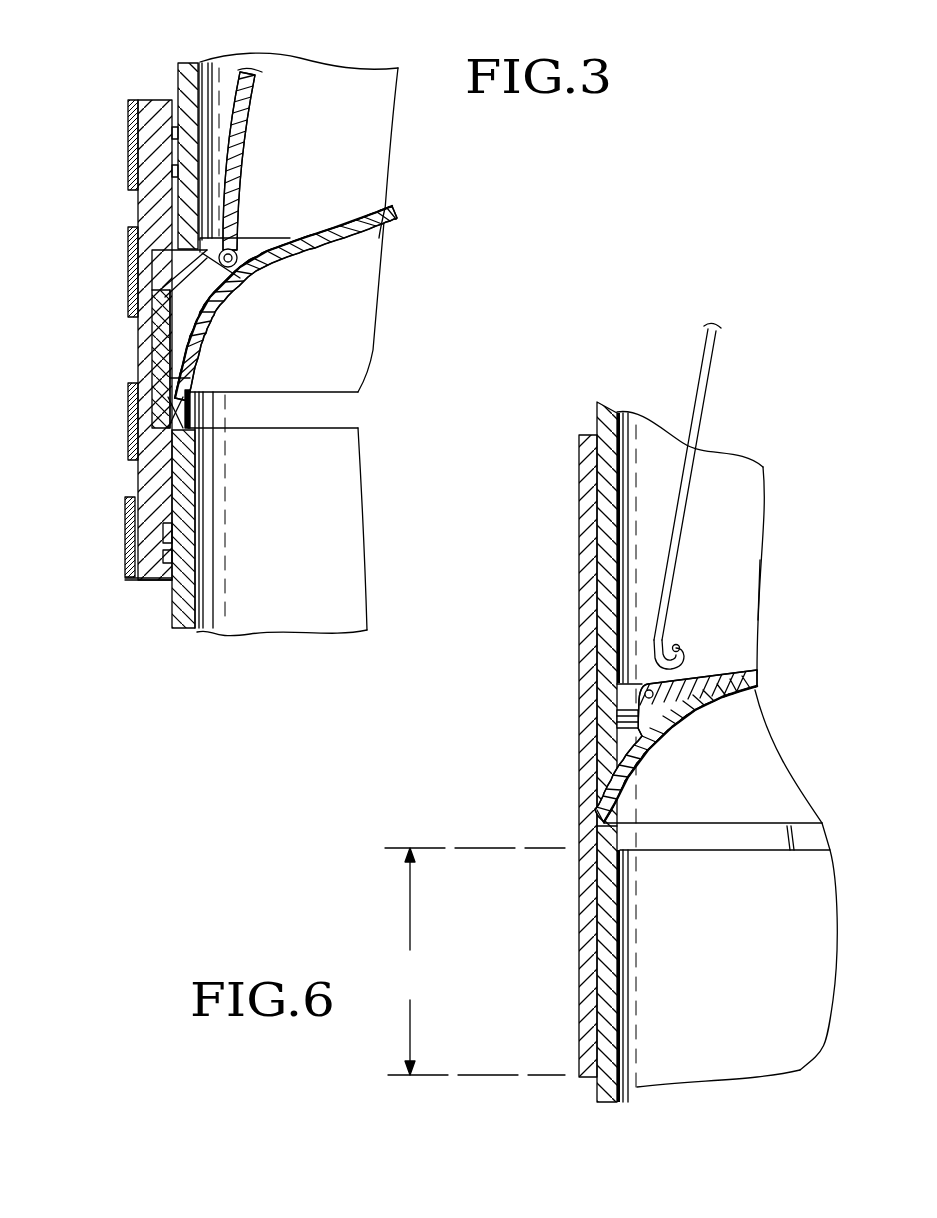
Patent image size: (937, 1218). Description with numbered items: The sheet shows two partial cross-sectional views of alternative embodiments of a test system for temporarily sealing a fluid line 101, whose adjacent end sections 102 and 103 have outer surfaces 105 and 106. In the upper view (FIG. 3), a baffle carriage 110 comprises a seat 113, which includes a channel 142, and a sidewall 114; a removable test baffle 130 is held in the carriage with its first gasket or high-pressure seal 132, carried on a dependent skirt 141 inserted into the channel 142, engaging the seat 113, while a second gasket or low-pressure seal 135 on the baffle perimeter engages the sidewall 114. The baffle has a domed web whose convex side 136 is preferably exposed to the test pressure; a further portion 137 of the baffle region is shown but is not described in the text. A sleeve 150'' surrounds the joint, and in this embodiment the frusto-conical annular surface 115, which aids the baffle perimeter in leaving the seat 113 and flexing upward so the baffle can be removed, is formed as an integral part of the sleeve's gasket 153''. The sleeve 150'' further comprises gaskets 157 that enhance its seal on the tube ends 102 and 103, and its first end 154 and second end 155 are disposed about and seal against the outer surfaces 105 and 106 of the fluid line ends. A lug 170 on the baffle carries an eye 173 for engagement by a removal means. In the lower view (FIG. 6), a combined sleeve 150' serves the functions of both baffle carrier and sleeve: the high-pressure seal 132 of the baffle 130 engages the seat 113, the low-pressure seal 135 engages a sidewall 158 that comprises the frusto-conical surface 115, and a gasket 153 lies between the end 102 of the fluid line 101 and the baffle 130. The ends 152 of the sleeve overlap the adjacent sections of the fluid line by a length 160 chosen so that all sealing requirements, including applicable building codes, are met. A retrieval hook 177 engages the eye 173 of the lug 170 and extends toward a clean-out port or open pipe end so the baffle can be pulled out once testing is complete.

In FIG. 6, the fluid line 101 is at (765, 455).
In FIG. 3, the end section of fluid line 102 is at (272, 632).
In FIG. 6, the end section of fluid line 102 is at (735, 1087).
In FIG. 3, the end section of fluid line 103 is at (320, 68).
In FIG. 6, the end section of fluid line 103 is at (762, 585).
In FIG. 6, the outer surface 105 is at (775, 960).
In FIG. 6, the outer surface 106 is at (732, 570).
In FIG. 3, the baffle carriage 110 is at (155, 315).
In FIG. 6, the seat 113 is at (793, 851).
In FIG. 3, the sidewall 114 is at (165, 338).
In FIG. 3, the frusto-conical annular surface 115 is at (222, 287).
In FIG. 6, the frusto-conical annular surface 115 is at (618, 745).
In FIG. 3, the test baffle 130 is at (372, 380).
In FIG. 6, the test baffle 130 is at (713, 778).
In FIG. 3, the first gasket or high-pressure seal 132 is at (190, 378).
In FIG. 6, the first gasket or high-pressure seal 132 is at (597, 845).
In FIG. 3, the second gasket or low-pressure seal 135 is at (172, 395).
In FIG. 6, the second gasket or low-pressure seal 135 is at (600, 815).
In FIG. 3, the convex side of web 136 is at (385, 213).
In FIG. 6, the convex side of web 136 is at (752, 678).
In FIG. 3, the edge 137 is at (380, 235).
In FIG. 6, the edge 137 is at (783, 756).
In FIG. 3, the dependent skirt 141 is at (180, 420).
In FIG. 3, the channel 142 is at (195, 445).
In FIG. 3, the sleeve 150'' is at (108, 340).
In FIG. 6, the sleeve 150' is at (562, 752).
In FIG. 6, the ends of sleeve 152 is at (585, 435).
In FIG. 6, the gasket 153 is at (741, 810).
In FIG. 3, the gasket 153'' is at (109, 338).
In FIG. 3, the first end of sleeve 154 is at (165, 100).
In FIG. 3, the second end of sleeve 155 is at (148, 585).
In FIG. 3, the gaskets 157 is at (160, 350).
In FIG. 6, the sidewall 158 is at (617, 718).
In FIG. 6, the overlap length 160 is at (475, 961).
In FIG. 3, the lug 170 is at (268, 240).
In FIG. 6, the lug 170 is at (692, 680).
In FIG. 6, the eye 173 is at (617, 688).
In FIG. 6, the retrieval hook 177 is at (722, 380).